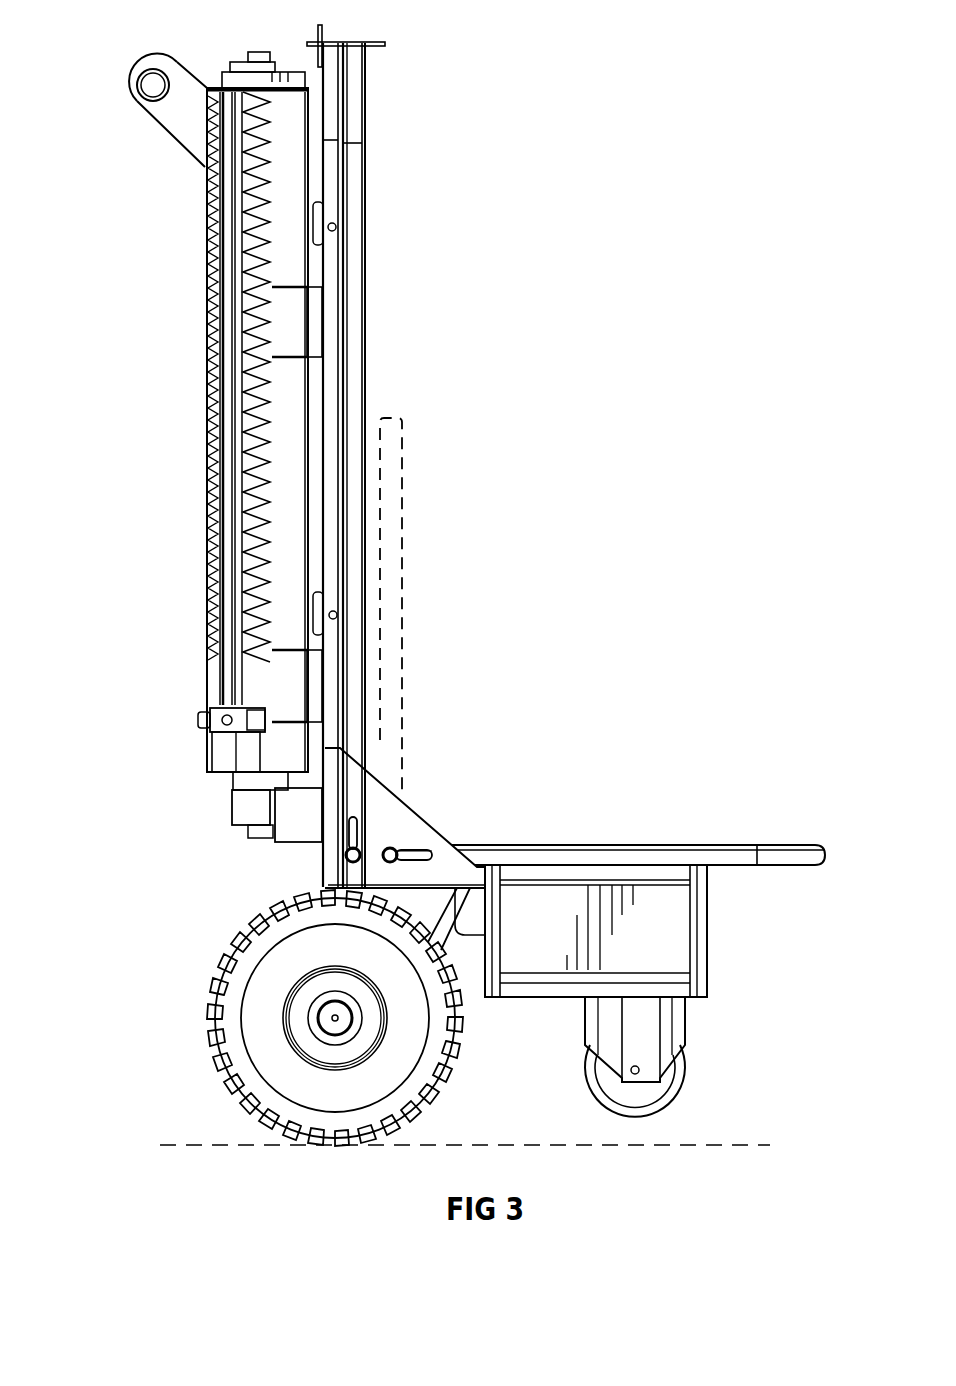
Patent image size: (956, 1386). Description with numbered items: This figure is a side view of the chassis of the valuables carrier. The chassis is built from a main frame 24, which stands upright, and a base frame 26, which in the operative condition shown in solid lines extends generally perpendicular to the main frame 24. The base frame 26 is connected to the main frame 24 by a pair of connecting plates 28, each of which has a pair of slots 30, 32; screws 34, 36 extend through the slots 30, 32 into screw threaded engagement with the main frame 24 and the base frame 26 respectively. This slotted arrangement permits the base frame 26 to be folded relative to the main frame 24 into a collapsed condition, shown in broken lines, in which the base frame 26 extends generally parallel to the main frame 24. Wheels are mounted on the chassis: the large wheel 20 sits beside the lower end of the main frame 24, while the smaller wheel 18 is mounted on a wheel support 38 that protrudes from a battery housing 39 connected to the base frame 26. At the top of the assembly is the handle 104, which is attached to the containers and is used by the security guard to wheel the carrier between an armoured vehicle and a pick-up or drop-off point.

The handle 104 is at (150, 77).
The main frame 24 is at (425, 185).
The base frame 26 is at (407, 457).
The connecting plate 28 is at (362, 795).
The slot 30 is at (370, 825).
The slot 32 is at (435, 846).
The screw 34 is at (345, 855).
The screw 36 is at (392, 847).
The wheel support 38 is at (633, 1032).
The wheel 18 is at (675, 1088).
The wheel 20 is at (235, 1062).
The battery housing 39 is at (707, 905).